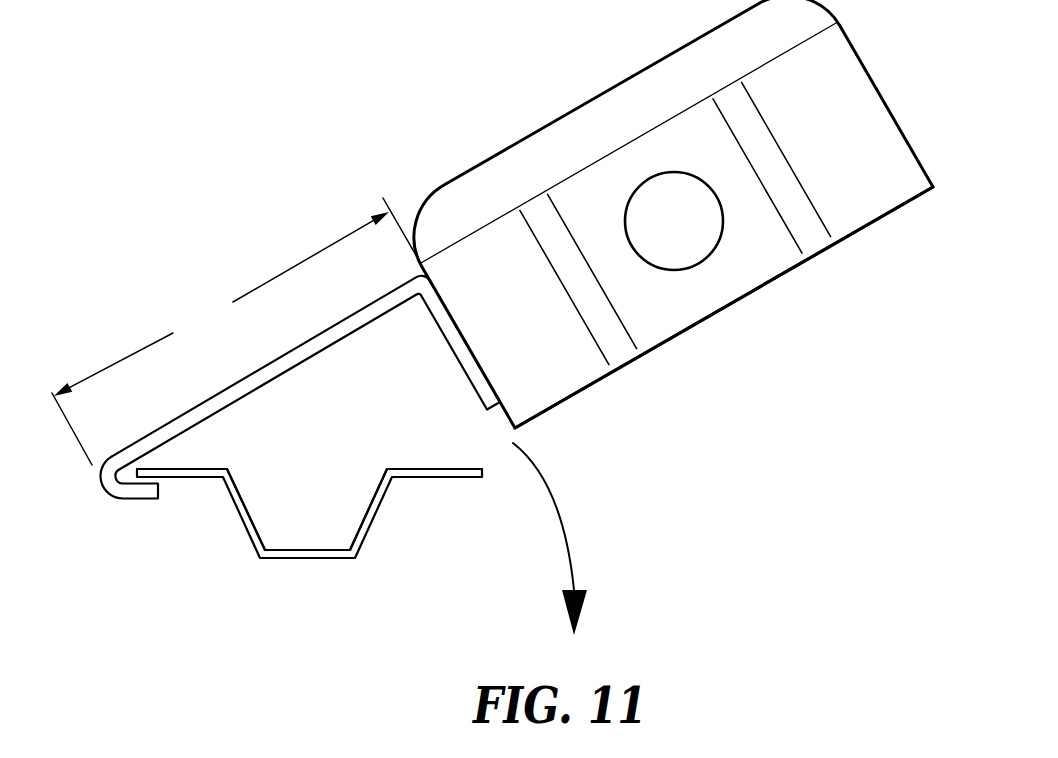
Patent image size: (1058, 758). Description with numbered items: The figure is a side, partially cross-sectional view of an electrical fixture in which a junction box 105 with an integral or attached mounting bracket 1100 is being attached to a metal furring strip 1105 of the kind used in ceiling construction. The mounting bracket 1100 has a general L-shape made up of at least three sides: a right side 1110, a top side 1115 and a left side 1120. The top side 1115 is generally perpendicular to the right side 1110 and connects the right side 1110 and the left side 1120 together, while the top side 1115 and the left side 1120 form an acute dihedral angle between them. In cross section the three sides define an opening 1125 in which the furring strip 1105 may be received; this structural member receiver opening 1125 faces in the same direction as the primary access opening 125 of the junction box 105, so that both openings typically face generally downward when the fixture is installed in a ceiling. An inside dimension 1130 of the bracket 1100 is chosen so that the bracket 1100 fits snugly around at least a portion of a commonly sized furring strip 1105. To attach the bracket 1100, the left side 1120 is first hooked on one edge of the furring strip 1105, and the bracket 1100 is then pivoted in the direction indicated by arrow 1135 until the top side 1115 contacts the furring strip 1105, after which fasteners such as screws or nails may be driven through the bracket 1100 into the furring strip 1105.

The junction box 105 is at (572, 110).
The primary access opening 125 is at (730, 306).
The mounting bracket 1100 is at (299, 385).
The metal furring strip 1105 is at (293, 560).
The right side 1110 is at (464, 370).
The top side 1115 is at (313, 358).
The left side 1120 is at (133, 499).
The opening 1125 is at (317, 453).
The inside dimension 1130 is at (234, 331).
The arrow 1135 is at (563, 536).